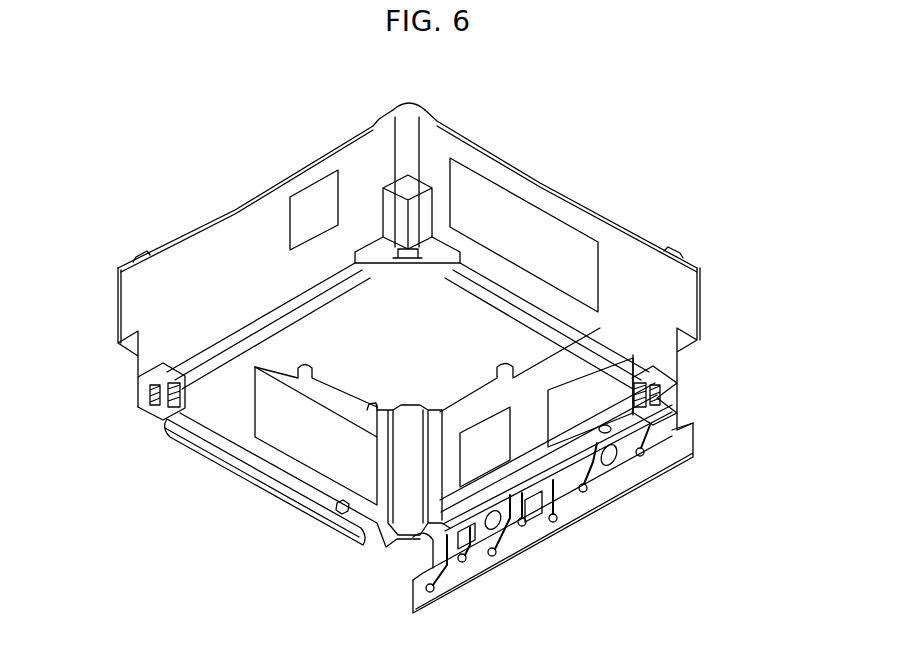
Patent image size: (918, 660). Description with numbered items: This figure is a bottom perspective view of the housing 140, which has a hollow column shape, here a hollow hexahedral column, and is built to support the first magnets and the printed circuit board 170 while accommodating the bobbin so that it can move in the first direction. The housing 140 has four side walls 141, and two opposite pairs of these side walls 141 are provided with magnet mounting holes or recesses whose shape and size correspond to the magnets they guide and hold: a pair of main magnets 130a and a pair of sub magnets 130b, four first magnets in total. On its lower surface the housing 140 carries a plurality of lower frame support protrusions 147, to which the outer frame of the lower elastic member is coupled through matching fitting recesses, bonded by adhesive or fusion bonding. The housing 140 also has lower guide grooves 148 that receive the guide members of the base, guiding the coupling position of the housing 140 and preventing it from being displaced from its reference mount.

The housing 140 is at (578, 100).
The side wall 141 is at (248, 236).
The main magnet 130a is at (552, 243).
The sub magnet 130b is at (312, 200).
The lower guide groove 148 is at (430, 212).
The lower frame support protrusion 147 is at (162, 412).
The printed circuit board 170 is at (512, 547).